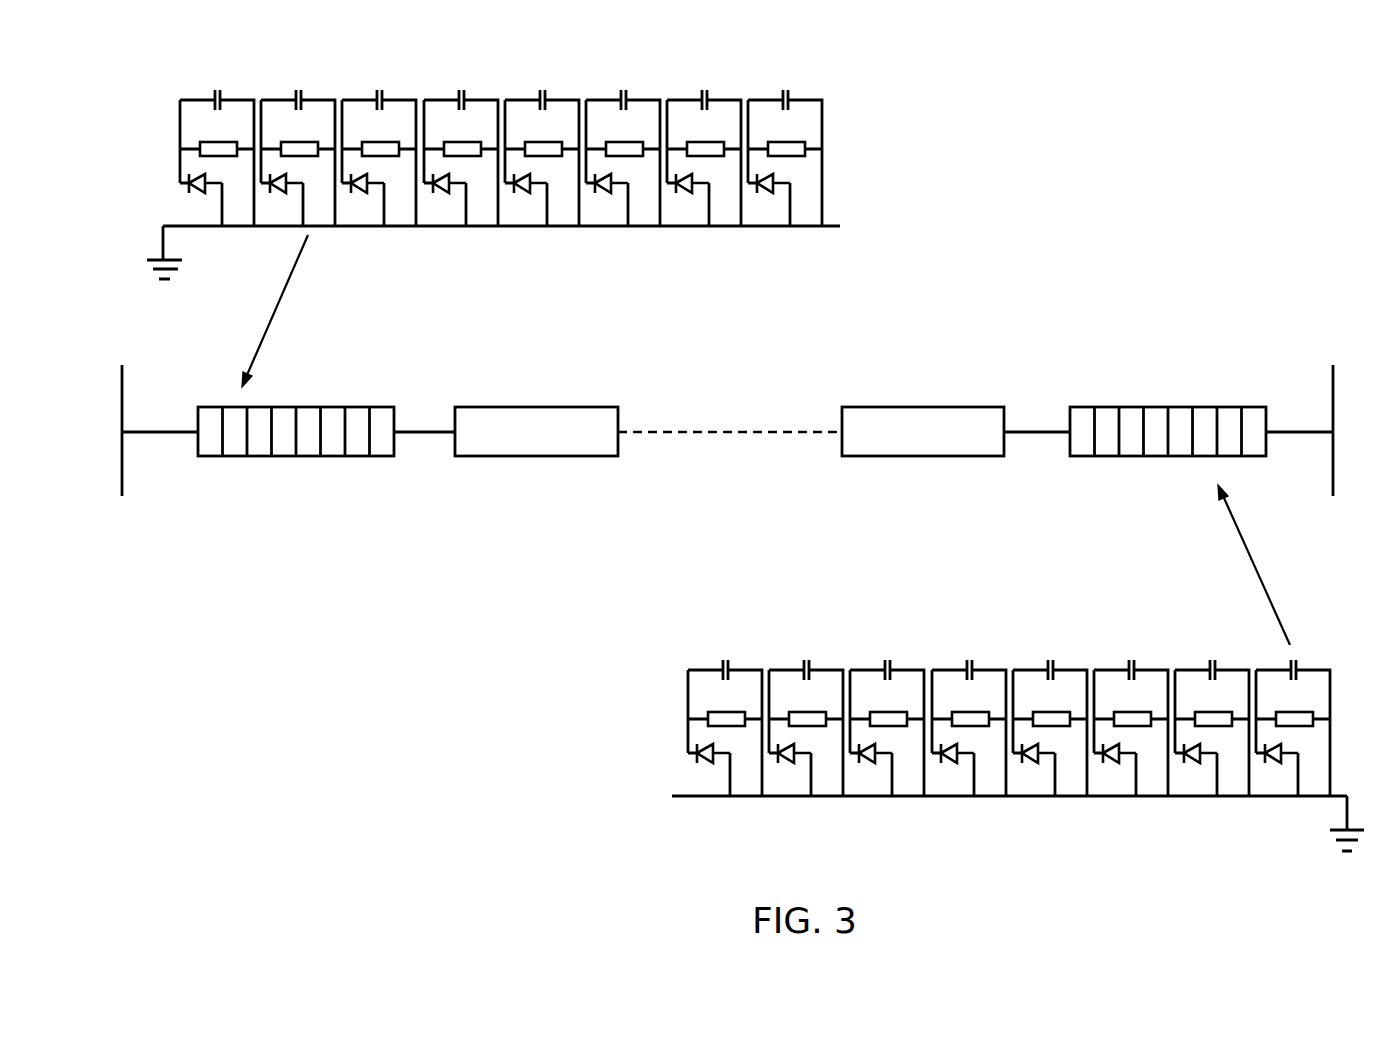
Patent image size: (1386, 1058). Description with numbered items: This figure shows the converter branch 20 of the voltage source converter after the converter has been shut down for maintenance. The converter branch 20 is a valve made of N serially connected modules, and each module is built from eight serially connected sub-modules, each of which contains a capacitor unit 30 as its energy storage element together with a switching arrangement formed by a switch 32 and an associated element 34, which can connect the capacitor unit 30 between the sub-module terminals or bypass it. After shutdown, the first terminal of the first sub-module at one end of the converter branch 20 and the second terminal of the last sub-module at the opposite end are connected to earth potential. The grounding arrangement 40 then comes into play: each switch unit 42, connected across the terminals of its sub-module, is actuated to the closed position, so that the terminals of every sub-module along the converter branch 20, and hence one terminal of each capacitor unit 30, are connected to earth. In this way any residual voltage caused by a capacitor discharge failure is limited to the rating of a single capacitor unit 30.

The converter branch 20 is at (701, 405).
The capacitor unit 30 is at (215, 89).
The switch 32 is at (212, 140).
The switching arrangement element 34 is at (198, 193).
The grounding arrangement 40 is at (522, 228).
The switch unit 42 is at (235, 215).